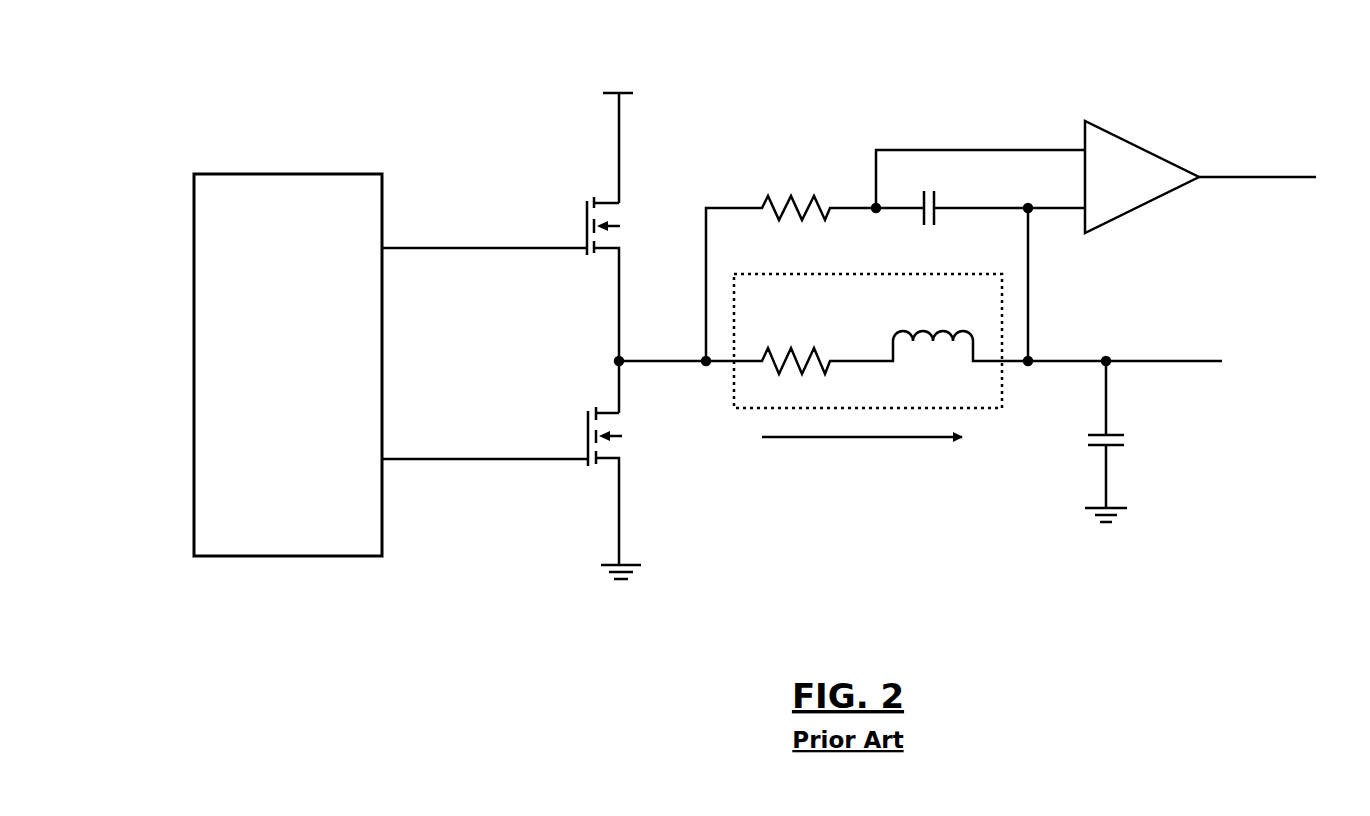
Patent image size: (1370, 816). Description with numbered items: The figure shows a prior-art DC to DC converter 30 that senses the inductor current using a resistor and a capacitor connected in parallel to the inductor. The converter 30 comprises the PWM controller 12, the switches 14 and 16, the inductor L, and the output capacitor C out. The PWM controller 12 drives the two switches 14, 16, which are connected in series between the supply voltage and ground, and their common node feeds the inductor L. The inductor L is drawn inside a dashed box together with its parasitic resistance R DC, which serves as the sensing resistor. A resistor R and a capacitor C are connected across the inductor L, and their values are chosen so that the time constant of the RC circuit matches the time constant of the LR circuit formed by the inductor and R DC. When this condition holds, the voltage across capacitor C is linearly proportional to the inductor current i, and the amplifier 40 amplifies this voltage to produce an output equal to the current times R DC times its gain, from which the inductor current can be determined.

The converter 30 is at (416, 56).
The PWM controller 12 is at (305, 172).
The switch 14 is at (591, 188).
The switch 16 is at (601, 398).
The amplifier 40 is at (1134, 134).